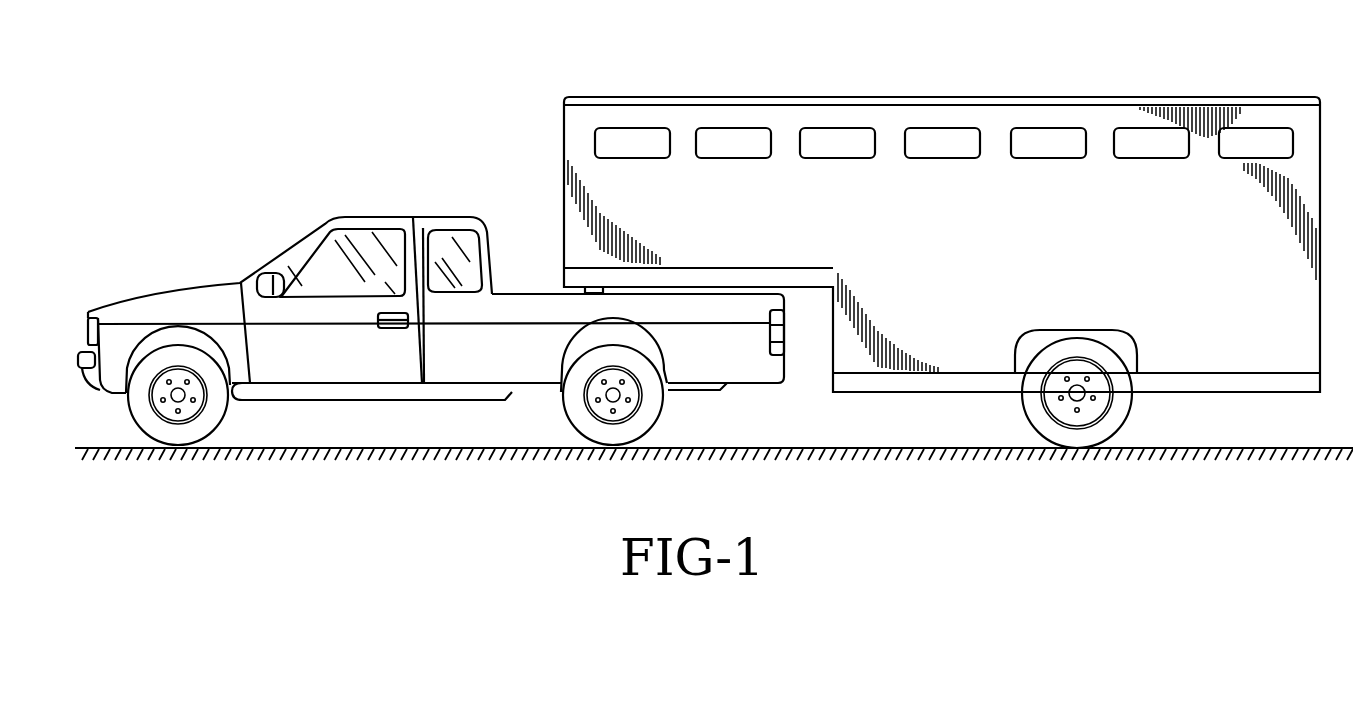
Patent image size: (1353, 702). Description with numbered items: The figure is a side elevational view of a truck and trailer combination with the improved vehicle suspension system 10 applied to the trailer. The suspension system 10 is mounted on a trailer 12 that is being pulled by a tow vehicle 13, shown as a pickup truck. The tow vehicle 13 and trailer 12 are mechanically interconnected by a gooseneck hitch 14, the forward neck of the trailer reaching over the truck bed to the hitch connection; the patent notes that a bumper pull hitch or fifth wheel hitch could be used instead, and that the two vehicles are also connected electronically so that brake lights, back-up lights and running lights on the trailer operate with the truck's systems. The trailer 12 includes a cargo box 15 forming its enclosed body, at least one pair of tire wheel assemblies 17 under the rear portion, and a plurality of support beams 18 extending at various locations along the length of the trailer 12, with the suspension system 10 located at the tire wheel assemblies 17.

The vehicle suspension system 10 is at (1148, 415).
The trailer 12 is at (1125, 85).
The tow vehicle 13 is at (312, 205).
The gooseneck hitch 14 is at (605, 265).
The cargo box 15 is at (1260, 113).
The tire wheel assembly 17 is at (1077, 342).
The support beam 18 is at (946, 387).